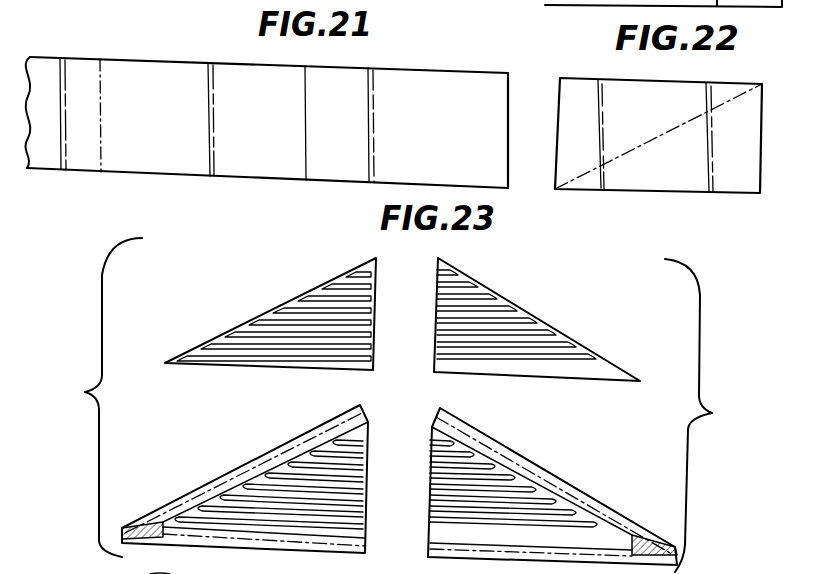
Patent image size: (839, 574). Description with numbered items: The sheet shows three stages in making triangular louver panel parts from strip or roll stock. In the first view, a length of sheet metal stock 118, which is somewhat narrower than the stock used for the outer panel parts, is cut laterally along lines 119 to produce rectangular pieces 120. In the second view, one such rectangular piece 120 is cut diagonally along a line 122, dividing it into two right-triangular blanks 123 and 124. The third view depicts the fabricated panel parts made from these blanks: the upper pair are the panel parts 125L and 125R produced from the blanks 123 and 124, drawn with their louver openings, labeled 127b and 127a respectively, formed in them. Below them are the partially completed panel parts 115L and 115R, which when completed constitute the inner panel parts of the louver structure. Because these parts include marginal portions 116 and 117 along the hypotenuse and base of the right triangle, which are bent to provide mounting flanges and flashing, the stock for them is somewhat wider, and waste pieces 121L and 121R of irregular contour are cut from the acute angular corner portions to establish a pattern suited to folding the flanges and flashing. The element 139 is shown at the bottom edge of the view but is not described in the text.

In FIG. 21, the sheet metal stock 118 is at (437, 67).
In FIG. 21, the cut lines 119 is at (99, 158).
In FIG. 22, the marginal portion 117 is at (757, 7).
In FIG. 22, the rectangular pieces 120 is at (703, 83).
In FIG. 22, the blank 123 is at (587, 58).
In FIG. 22, the diagonal cut line 122 is at (615, 156).
In FIG. 22, the blank 124 is at (730, 187).
In FIG. 23, the left panel part 125L is at (294, 291).
In FIG. 23, the right panel part 125R is at (550, 312).
In FIG. 23, the louver slats 127a is at (441, 448).
In FIG. 23, the louver slats 127b is at (443, 323).
In FIG. 23, the partially completed left panel part 115L is at (247, 456).
In FIG. 23, the partially completed right panel part 115R is at (593, 485).
In FIG. 23, the marginal portion 116 is at (288, 447).
In FIG. 23, the waste piece 121L is at (123, 527).
In FIG. 23, the waste piece 121R is at (672, 538).
In FIG. 23, the connector 139 is at (349, 560).